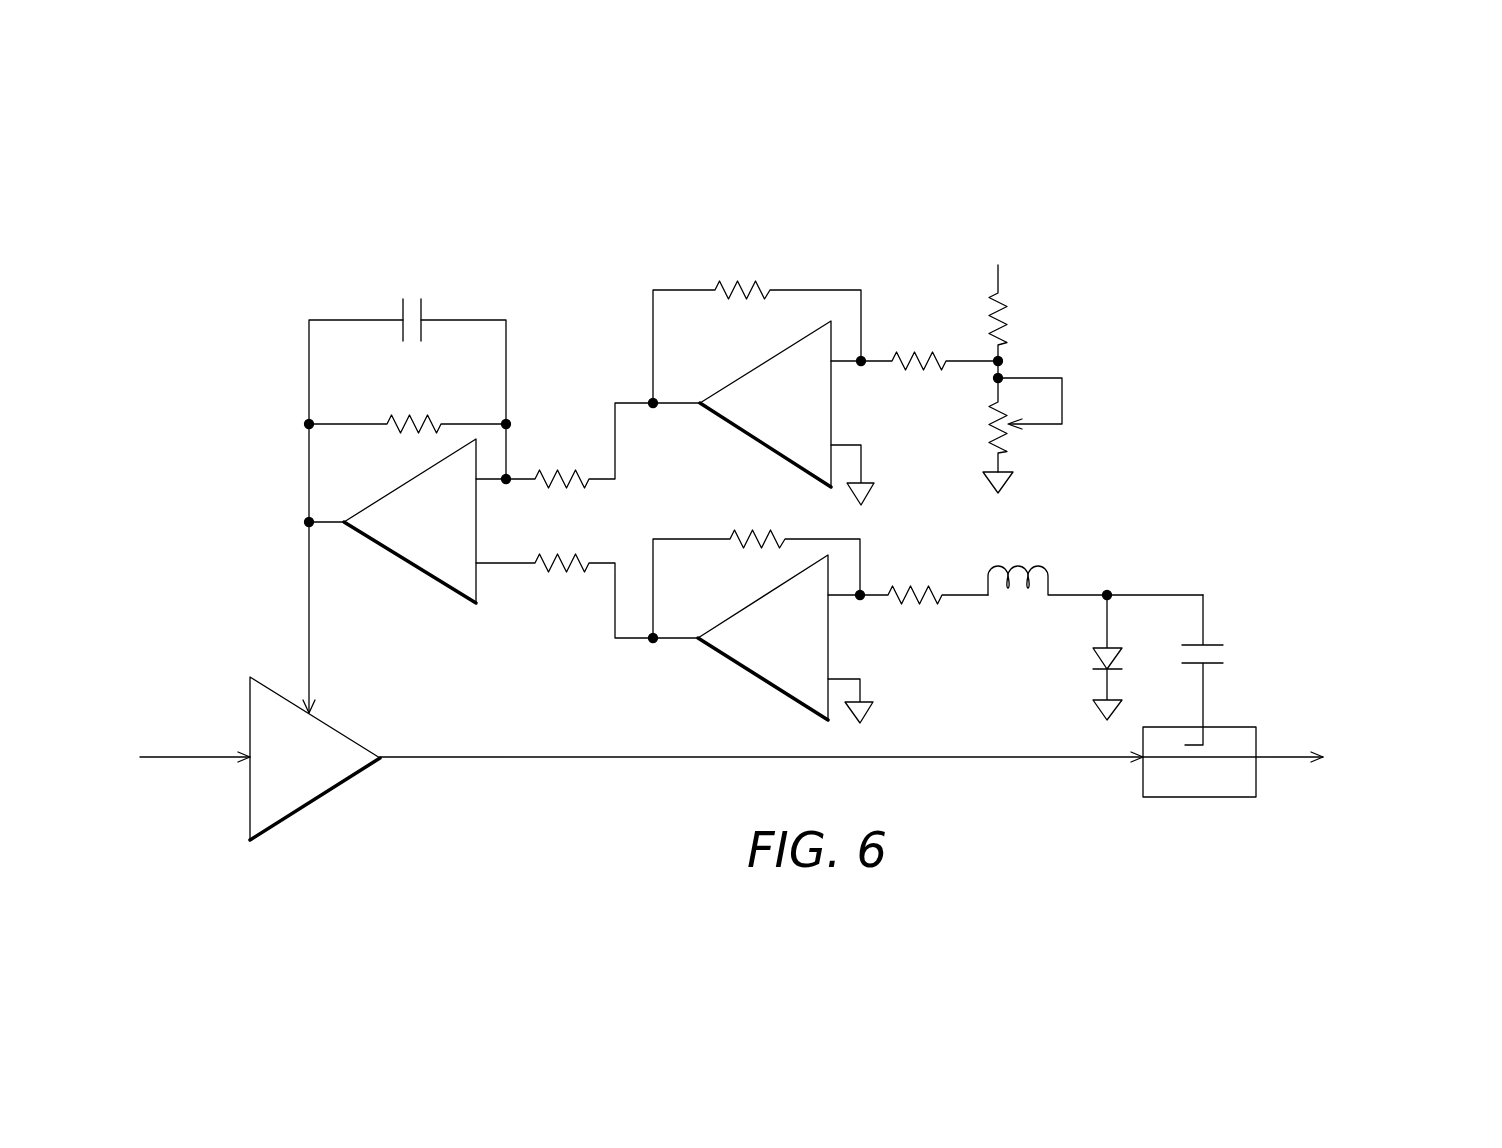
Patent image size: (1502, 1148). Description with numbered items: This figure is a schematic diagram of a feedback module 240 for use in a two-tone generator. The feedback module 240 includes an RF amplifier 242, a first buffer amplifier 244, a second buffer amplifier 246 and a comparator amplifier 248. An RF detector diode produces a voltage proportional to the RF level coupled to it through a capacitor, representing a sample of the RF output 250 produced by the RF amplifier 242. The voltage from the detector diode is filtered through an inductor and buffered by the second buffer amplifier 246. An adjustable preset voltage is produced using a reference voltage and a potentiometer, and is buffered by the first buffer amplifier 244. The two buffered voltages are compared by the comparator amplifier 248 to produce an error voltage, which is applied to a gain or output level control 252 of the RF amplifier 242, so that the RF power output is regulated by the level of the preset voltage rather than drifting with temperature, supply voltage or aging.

The feedback module 240 is at (1053, 247).
The RF amplifier 242 is at (310, 791).
The first buffer amplifier 244 is at (810, 411).
The second buffer amplifier 246 is at (807, 648).
The comparator amplifier 248 is at (462, 539).
The RF output 250 is at (408, 759).
The gain or output level control 252 is at (313, 715).